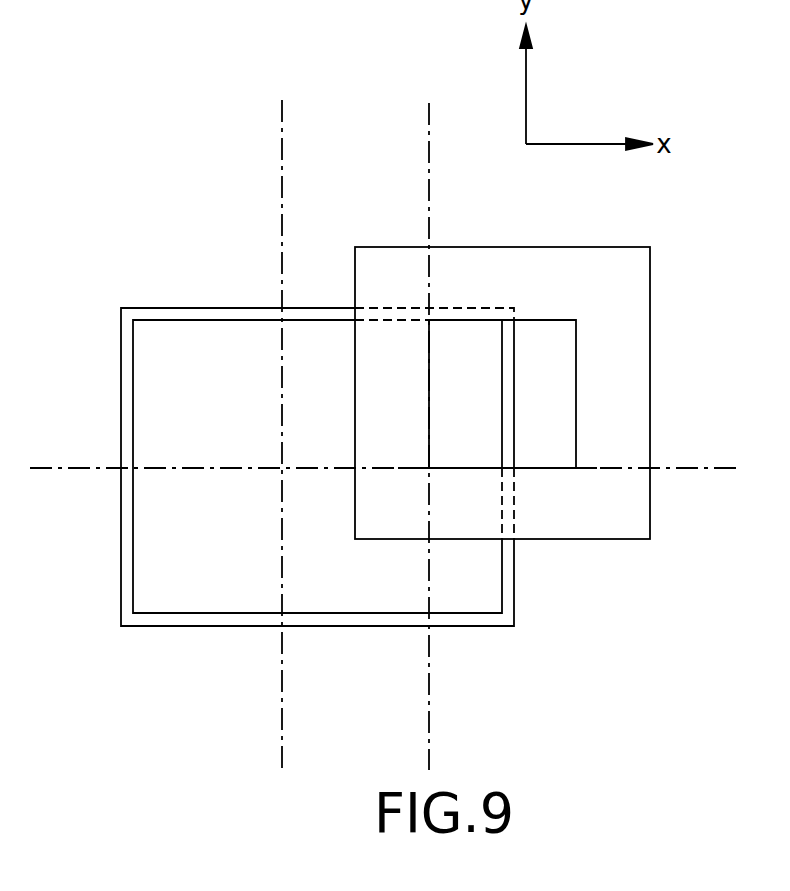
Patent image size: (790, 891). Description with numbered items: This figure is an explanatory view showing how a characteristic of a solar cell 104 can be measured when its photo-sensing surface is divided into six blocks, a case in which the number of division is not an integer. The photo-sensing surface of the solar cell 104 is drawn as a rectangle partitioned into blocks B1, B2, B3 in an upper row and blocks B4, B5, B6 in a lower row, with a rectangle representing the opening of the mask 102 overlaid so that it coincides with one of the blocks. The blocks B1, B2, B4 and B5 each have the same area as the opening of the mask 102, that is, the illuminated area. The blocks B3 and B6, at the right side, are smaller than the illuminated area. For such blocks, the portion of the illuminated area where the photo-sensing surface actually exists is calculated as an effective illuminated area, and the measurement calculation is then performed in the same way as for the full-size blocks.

The mask 102 is at (650, 318).
The solar cell 104 is at (213, 626).
The block B1 is at (207, 394).
The block B2 is at (355, 365).
The block B3 is at (497, 394).
The block B4 is at (207, 540).
The block B5 is at (355, 571).
The block B6 is at (465, 540).